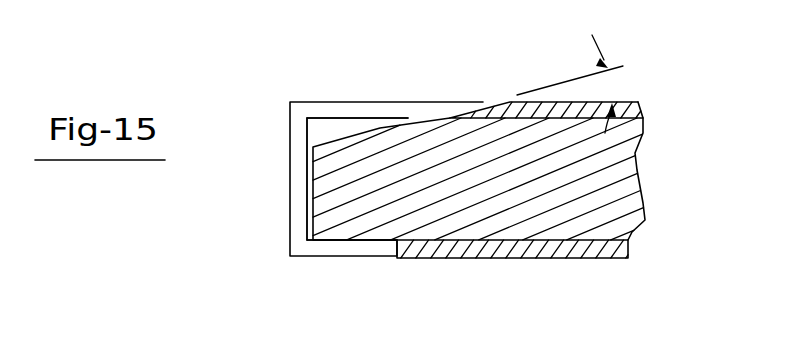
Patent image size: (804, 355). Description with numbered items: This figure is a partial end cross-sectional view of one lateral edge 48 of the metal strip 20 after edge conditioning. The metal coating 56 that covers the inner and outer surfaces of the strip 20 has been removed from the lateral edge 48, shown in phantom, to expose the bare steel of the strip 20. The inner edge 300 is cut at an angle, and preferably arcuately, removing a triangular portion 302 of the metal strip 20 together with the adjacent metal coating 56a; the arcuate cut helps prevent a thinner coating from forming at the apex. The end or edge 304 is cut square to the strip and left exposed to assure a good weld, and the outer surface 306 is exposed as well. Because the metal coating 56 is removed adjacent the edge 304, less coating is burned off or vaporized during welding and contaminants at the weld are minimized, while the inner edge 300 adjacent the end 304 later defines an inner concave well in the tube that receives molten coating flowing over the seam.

The metal strip 20 is at (598, 188).
The lateral edge 48 is at (245, 110).
The metal coating 56 is at (520, 259).
The metal coating 56a is at (293, 225).
The inner edge 300 is at (370, 133).
The triangular portion 302 is at (332, 127).
The end or edge 304 is at (311, 177).
The outer surface 306 is at (335, 242).